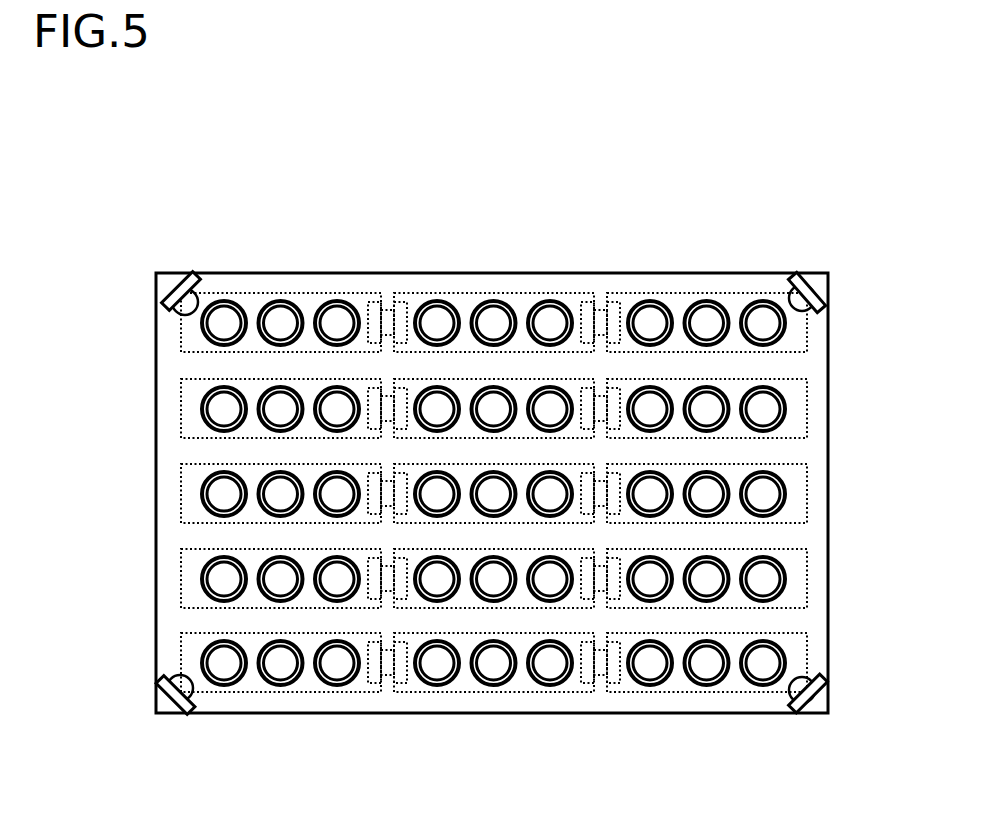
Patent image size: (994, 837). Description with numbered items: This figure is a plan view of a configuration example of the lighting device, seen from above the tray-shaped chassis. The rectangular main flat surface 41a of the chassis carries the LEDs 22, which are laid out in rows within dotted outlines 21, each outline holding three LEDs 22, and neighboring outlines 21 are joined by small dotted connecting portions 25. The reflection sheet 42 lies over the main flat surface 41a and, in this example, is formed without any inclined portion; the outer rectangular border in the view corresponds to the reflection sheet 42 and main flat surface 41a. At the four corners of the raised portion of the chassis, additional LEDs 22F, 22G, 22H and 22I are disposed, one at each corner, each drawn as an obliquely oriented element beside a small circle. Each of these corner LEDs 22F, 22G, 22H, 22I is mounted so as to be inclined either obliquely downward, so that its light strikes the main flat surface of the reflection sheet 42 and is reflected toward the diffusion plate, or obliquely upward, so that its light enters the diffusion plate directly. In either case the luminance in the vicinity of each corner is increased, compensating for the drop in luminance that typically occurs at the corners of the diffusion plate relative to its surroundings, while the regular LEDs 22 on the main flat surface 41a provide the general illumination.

The reflection sheet 42 is at (432, 493).
The main flat surface 41a is at (187, 455).
The light emitting unit 21 is at (281, 284).
The LED 22 is at (225, 323).
The connecting portion 25 is at (402, 300).
The LED 22H is at (197, 277).
The LED 22F is at (812, 314).
The LED 22G is at (810, 673).
The LED 22I is at (202, 705).